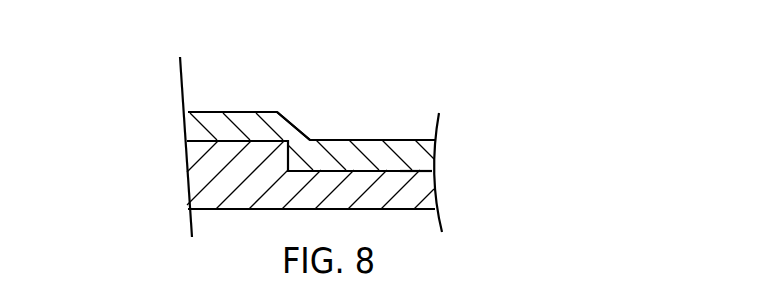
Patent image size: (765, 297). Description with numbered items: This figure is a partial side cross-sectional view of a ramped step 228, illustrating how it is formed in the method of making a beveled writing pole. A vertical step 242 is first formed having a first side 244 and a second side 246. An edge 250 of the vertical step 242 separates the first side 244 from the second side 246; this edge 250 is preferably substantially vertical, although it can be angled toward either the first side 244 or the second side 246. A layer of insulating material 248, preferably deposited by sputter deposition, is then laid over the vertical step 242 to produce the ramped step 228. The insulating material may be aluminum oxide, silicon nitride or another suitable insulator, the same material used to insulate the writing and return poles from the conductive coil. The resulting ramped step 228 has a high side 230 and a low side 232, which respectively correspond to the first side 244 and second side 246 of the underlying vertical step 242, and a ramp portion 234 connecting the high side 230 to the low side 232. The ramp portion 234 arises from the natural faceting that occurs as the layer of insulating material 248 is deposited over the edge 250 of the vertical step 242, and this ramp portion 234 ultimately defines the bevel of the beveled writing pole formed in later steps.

The ramped step 228 is at (422, 60).
The high side 230 is at (223, 110).
The low side 232 is at (408, 140).
The ramp portion 234 is at (287, 118).
The vertical step 242 is at (188, 188).
The first side 244 is at (203, 148).
The second side 246 is at (420, 192).
The layer of insulating material 248 is at (424, 157).
The edge 250 is at (313, 138).